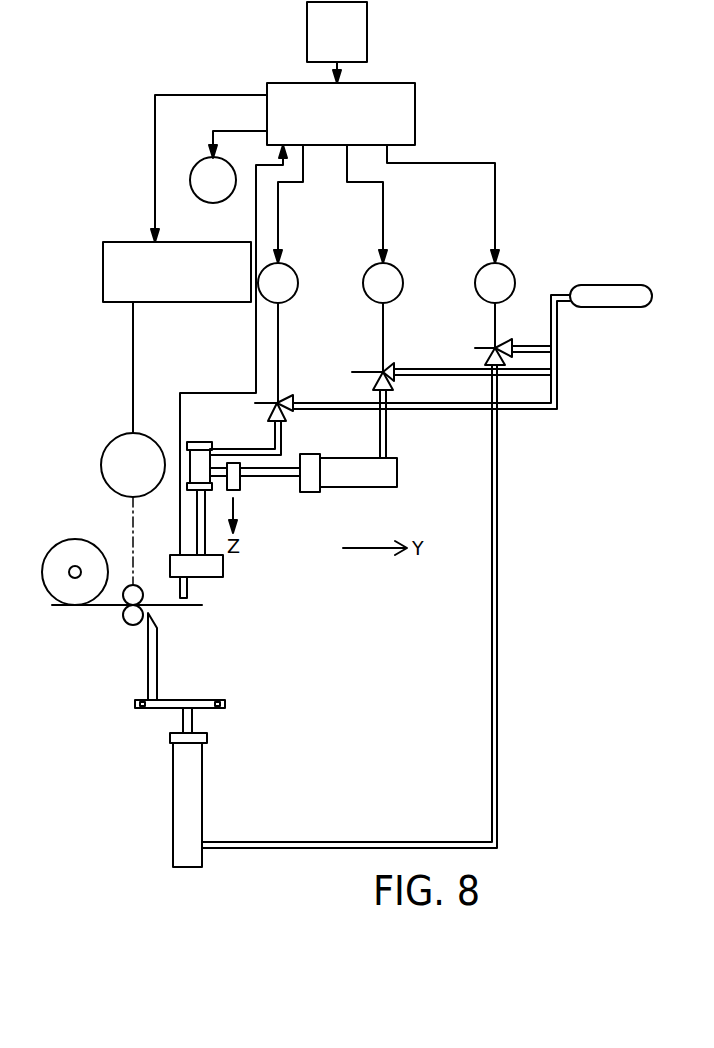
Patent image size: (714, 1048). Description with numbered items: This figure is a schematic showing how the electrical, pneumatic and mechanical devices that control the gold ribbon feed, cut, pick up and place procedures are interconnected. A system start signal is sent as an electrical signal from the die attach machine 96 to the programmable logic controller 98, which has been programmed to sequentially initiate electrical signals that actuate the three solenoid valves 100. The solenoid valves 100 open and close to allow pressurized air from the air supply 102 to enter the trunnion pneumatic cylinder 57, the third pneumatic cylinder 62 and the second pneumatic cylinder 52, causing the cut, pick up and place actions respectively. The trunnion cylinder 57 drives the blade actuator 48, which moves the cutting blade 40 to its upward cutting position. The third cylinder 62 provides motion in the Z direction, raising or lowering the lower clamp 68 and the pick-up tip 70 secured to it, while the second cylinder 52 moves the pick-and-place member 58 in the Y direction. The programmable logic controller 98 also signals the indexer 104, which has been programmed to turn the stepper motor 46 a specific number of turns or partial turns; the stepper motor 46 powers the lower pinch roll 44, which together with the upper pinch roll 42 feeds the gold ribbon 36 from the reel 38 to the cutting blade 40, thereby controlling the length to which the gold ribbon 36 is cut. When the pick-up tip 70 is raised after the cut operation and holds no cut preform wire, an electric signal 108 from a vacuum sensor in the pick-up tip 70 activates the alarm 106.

The gold ribbon 36 is at (110, 608).
The reel 38 is at (48, 596).
The cutting blade 40 is at (158, 655).
The upper pinch roll 42 is at (136, 625).
The lower pinch roll 44 is at (129, 586).
The stepper motor 46 is at (113, 440).
The blade actuator 48 is at (218, 698).
The second pneumatic cylinder 52 is at (360, 487).
The first pneumatic (trunnion) cylinder 57 is at (172, 752).
The pick-and-place member 58 is at (238, 490).
The third pneumatic cylinder 62 is at (205, 442).
The lower clamp 68 is at (216, 577).
The pick-up tip 70 is at (190, 592).
The die attach machine 96 is at (367, 31).
The programmable logic controller 98 is at (415, 100).
The solenoid valves 100 is at (296, 276).
The air supply 102 is at (604, 307).
The indexer 104 is at (177, 272).
The alarm 106 is at (198, 199).
The electric signal 108 is at (180, 393).